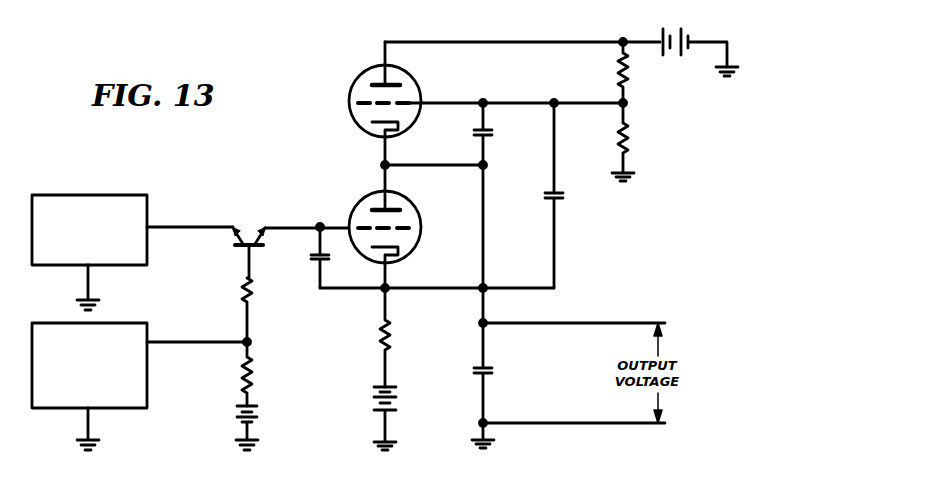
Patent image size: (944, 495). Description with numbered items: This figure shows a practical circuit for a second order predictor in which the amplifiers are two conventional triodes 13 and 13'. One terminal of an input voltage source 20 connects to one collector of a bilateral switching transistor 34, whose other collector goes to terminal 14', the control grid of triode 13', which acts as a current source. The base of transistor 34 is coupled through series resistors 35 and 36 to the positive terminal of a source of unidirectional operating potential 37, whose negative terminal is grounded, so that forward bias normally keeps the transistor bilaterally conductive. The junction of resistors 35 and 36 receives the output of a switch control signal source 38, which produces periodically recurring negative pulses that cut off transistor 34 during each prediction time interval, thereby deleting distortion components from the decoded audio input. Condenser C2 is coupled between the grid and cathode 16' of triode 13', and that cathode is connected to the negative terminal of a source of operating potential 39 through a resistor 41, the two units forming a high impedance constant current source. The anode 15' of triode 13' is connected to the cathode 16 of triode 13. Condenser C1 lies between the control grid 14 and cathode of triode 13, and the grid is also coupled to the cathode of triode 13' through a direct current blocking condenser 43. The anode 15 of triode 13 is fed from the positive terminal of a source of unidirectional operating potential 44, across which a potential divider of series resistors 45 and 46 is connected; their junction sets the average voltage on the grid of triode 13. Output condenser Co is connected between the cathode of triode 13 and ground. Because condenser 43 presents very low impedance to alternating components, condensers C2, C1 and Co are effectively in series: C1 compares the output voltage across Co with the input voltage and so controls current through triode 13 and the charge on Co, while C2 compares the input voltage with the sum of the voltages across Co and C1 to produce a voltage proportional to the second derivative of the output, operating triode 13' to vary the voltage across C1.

The triode 13 is at (373, 100).
The control grid terminal of triode 13 14 is at (490, 88).
The anode of triode 13 15 is at (400, 63).
The cathode of triode 13 16 is at (373, 143).
The triode 13' is at (375, 219).
The terminal 14' is at (363, 214).
The anode of triode 13' 15' is at (408, 187).
The cathode of triode 13' 16' is at (404, 267).
The input voltage source 20 is at (140, 195).
The bilateral switching transistor 34 is at (218, 262).
The resistor 35 is at (238, 286).
The resistor 36 is at (238, 363).
The source of unidirectional operating potential 37 is at (236, 410).
The switch control signal source 38 is at (138, 324).
The source of operating potential 39 is at (395, 400).
The resistor 41 is at (392, 335).
The D.C. blocking condenser 43 is at (560, 200).
The source of unidirectional operating potential 44 is at (674, 56).
The resistor 45 is at (618, 70).
The resistor 46 is at (618, 141).
The condenser C1 is at (496, 134).
The condenser C2 is at (310, 257).
The output condenser Co is at (494, 306).